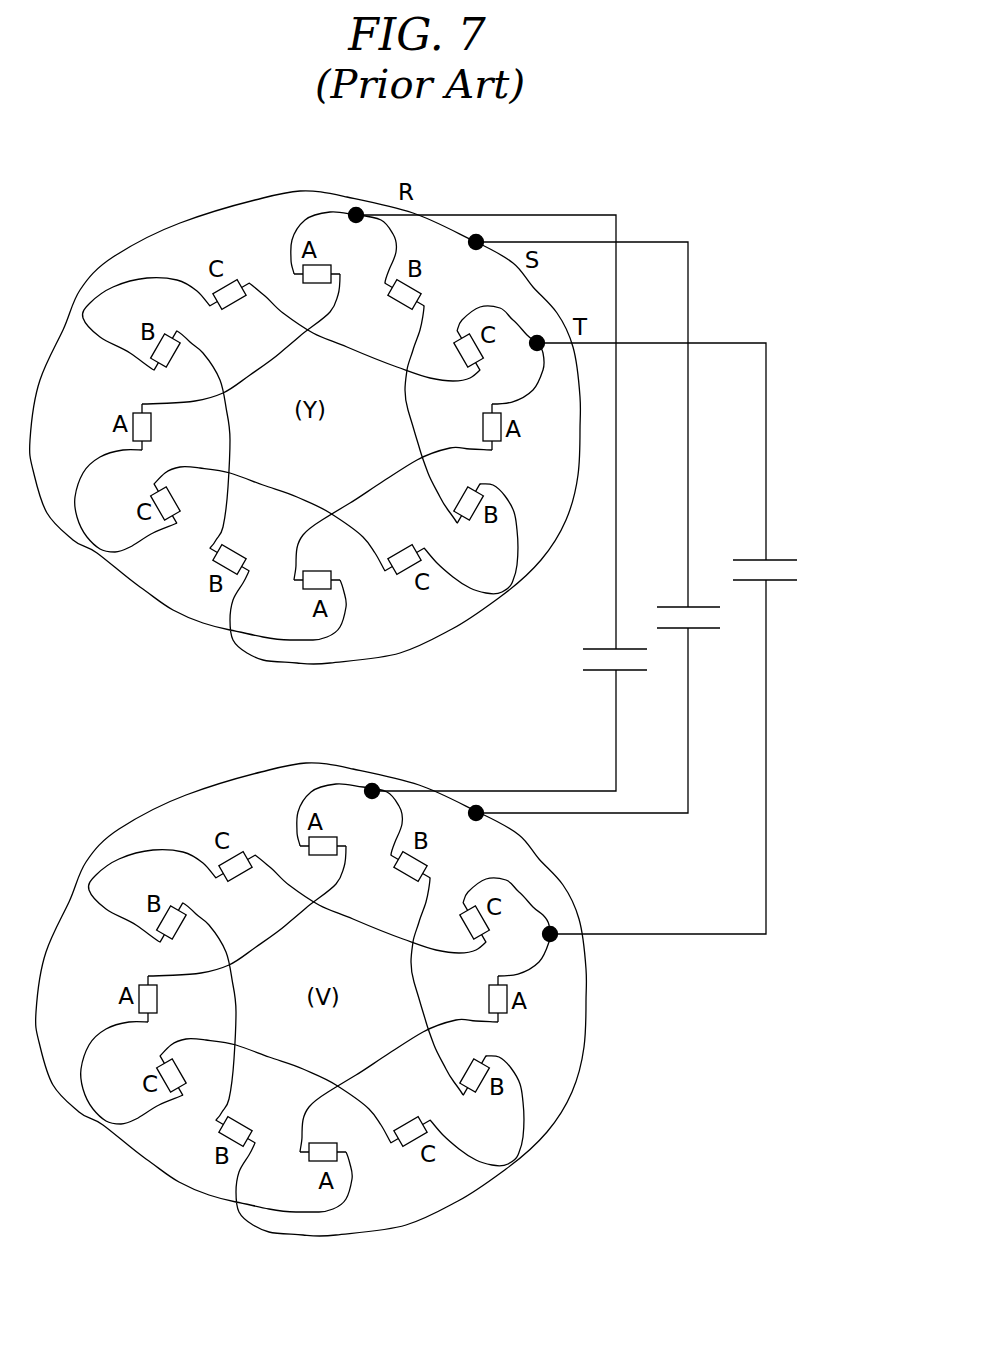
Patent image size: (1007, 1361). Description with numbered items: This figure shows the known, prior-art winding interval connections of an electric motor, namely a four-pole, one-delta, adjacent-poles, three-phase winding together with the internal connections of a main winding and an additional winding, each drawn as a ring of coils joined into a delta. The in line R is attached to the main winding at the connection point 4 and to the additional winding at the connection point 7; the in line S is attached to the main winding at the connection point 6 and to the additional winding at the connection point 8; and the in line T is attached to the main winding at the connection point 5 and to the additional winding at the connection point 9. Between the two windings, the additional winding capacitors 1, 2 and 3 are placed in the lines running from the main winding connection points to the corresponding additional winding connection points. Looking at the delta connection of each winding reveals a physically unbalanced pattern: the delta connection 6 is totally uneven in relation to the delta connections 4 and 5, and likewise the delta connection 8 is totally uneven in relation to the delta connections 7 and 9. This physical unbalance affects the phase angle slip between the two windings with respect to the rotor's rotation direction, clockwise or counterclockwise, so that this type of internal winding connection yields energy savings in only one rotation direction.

The additional winding capacitor 1 is at (608, 643).
The additional winding capacitor 2 is at (684, 602).
The additional winding capacitor 3 is at (758, 553).
The delta connection point for in line (R) of the main winding 4 is at (353, 231).
The delta connection point for in line (T) of the main winding 5 is at (526, 359).
The delta connection point for in line (S) of the main winding 6 is at (472, 260).
The delta connection point for in line (R) of the additional winding 7 is at (370, 810).
The delta connection point for in line (S) of the additional winding 8 is at (473, 831).
The delta connection point for in line (T) of the additional winding 9 is at (533, 940).